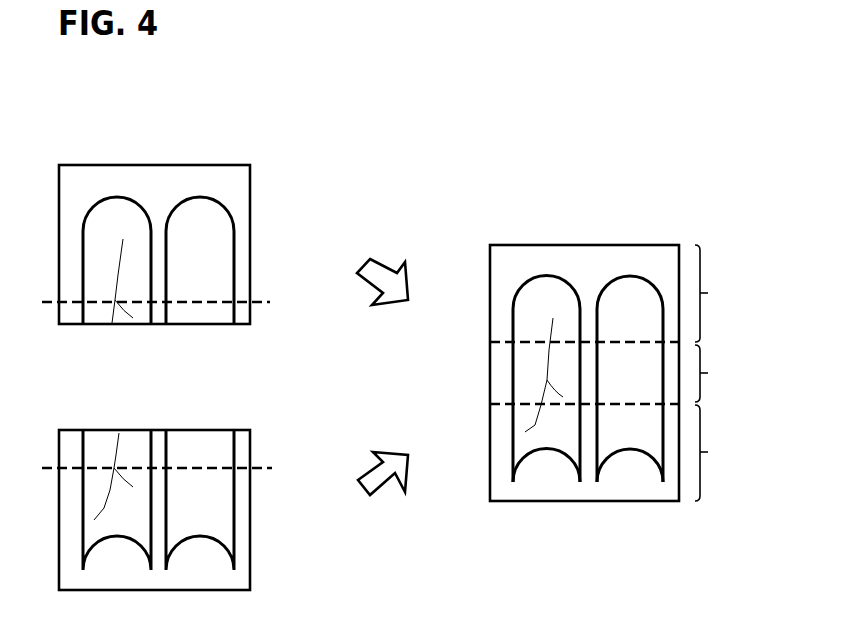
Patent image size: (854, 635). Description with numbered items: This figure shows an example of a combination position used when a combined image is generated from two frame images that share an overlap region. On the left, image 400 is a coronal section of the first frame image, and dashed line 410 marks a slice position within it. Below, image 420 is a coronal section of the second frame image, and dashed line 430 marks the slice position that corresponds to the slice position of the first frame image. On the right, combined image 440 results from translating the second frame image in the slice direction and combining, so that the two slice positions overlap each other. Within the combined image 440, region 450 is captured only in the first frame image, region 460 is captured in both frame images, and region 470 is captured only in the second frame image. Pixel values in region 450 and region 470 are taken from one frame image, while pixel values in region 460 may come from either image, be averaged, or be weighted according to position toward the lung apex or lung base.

The image 400 is at (212, 165).
The dashed line 410 is at (261, 300).
The image 420 is at (213, 430).
The dashed line 430 is at (261, 467).
The combined image 440 is at (652, 245).
The region 450 is at (727, 293).
The region 460 is at (727, 373).
The region 470 is at (727, 453).